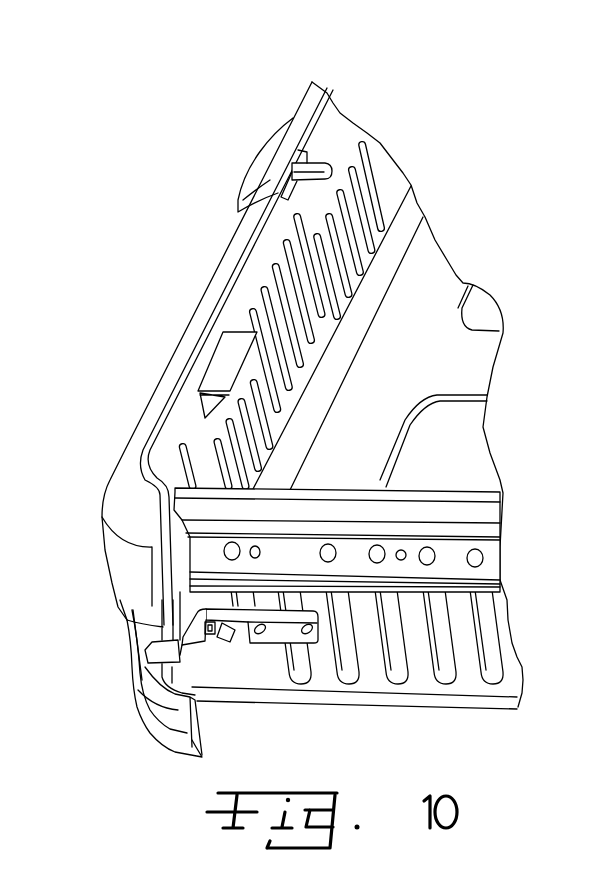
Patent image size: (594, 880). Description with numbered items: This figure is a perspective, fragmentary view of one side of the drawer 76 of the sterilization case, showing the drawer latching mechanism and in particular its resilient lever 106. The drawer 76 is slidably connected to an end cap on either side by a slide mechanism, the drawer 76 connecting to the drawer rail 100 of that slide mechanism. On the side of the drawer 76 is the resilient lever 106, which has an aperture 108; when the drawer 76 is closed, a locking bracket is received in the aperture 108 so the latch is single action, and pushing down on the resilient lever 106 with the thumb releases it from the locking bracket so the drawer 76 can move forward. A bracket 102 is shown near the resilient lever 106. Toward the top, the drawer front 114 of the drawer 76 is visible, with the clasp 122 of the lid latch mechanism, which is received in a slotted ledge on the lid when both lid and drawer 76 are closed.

The drawer 76 is at (513, 677).
The drawer rail 100 is at (460, 535).
The mounting bracket 102 is at (289, 647).
The resilient lever 106 is at (152, 642).
The aperture 108 is at (209, 634).
The drawer front 114 is at (221, 302).
The clasp 122 is at (331, 163).